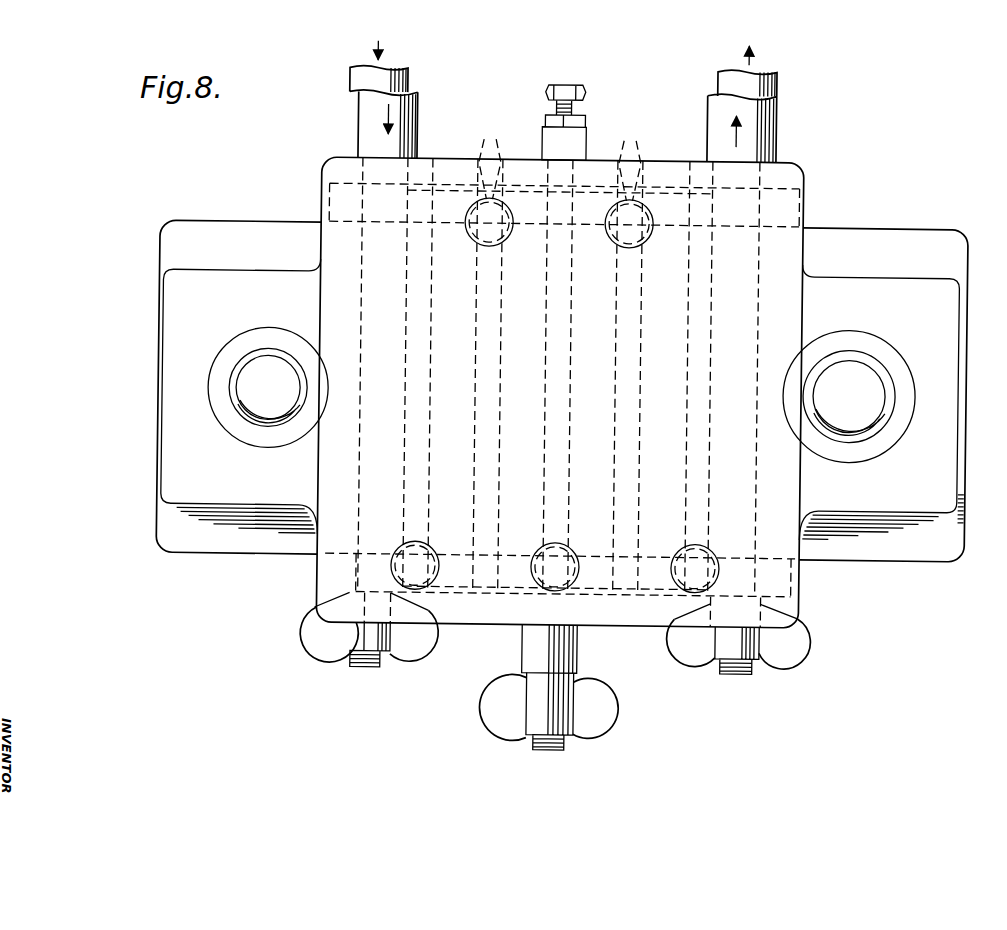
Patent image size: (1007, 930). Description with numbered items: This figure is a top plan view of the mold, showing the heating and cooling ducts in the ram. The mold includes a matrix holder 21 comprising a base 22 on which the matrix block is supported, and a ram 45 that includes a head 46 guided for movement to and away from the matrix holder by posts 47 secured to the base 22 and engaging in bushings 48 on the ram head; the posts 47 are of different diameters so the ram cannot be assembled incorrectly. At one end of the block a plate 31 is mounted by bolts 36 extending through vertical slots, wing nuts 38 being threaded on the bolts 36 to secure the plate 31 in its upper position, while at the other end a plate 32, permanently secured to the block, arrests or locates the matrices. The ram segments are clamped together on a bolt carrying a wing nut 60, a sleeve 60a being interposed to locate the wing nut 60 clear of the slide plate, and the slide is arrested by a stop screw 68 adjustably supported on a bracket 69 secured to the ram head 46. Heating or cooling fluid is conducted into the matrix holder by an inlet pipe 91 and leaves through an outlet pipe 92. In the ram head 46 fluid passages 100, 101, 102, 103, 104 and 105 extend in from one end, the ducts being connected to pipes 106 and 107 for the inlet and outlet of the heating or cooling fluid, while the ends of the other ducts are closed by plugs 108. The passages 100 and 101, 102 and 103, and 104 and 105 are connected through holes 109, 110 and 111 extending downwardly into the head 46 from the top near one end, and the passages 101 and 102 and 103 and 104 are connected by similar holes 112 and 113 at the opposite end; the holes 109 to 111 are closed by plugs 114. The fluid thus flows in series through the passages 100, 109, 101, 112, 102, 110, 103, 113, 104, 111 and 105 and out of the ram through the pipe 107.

The matrix holder 21 is at (173, 203).
The base 22 is at (158, 252).
The plate 31 is at (318, 574).
The plate 32 is at (776, 184).
The bolts 36 is at (358, 670).
The wing nuts 38 is at (315, 637).
The ram 45 is at (318, 151).
The ram head 46 is at (330, 175).
The posts 47 is at (243, 372).
The bushings 48 is at (245, 428).
The wing nut 60 is at (506, 699).
The sleeve 60a is at (537, 645).
The stop screw 68 is at (553, 105).
The bracket 69 is at (575, 148).
The inlet pipe 91 is at (355, 78).
The outlet pipe 92 is at (768, 74).
The fluid passage 100 is at (358, 314).
The fluid passage 101 is at (475, 381).
The fluid passage 102 is at (545, 391).
The fluid passage 103 is at (615, 385).
The fluid passage 104 is at (687, 386).
The fluid passage 105 is at (757, 328).
The pipe 106 is at (416, 112).
The pipe 107 is at (712, 110).
The plugs 108 is at (568, 157).
The hole 109 is at (399, 550).
The hole 110 is at (538, 556).
The hole 111 is at (677, 554).
The hole 112 is at (478, 238).
The hole 113 is at (612, 236).
The plugs 114 is at (505, 244).